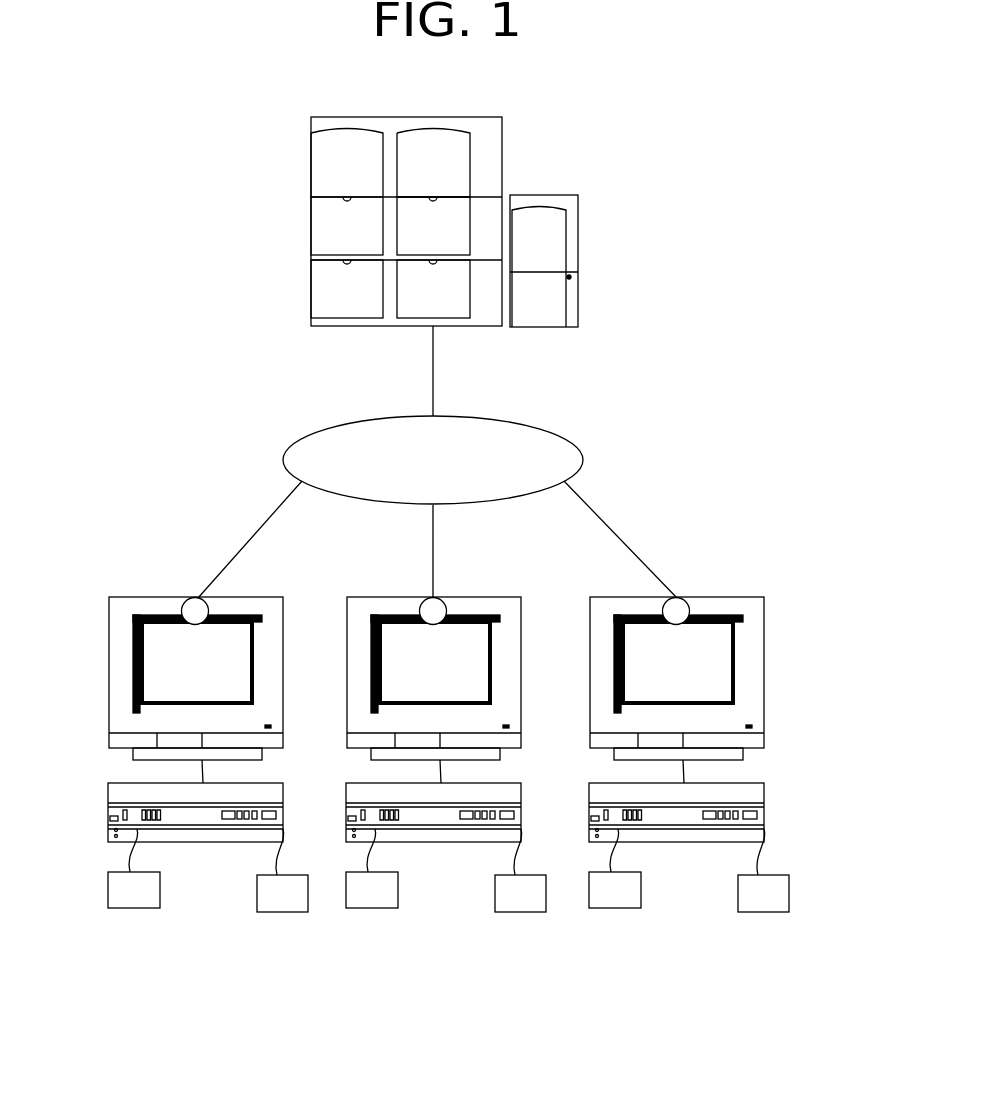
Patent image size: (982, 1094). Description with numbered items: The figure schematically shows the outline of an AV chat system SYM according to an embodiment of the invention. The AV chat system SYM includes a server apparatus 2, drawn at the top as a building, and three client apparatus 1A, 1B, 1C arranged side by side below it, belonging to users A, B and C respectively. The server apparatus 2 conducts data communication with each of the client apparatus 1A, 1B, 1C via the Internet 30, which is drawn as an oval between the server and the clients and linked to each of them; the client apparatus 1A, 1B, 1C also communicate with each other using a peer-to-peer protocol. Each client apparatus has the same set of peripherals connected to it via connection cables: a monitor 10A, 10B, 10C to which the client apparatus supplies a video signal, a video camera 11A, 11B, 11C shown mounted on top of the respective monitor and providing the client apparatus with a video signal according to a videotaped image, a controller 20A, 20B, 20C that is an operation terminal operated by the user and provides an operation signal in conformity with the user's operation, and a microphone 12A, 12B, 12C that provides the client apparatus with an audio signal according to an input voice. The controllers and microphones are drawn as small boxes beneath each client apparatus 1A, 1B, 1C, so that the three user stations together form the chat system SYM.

The AV chat system SYM is at (238, 463).
The server apparatus 2 is at (502, 160).
The Internet 30 is at (507, 418).
The monitor 10A is at (117, 680).
The monitor 10B is at (462, 690).
The monitor 10C is at (705, 690).
The video camera 11A is at (210, 602).
The video camera 11B is at (466, 579).
The video camera 11C is at (710, 579).
The client apparatus 1A is at (280, 793).
The client apparatus 1B is at (457, 802).
The client apparatus 1C is at (704, 802).
The controller 20A is at (147, 898).
The controller 20B is at (398, 894).
The controller 20C is at (641, 894).
The microphone 12A is at (287, 897).
The microphone 12B is at (543, 894).
The microphone 12C is at (786, 894).